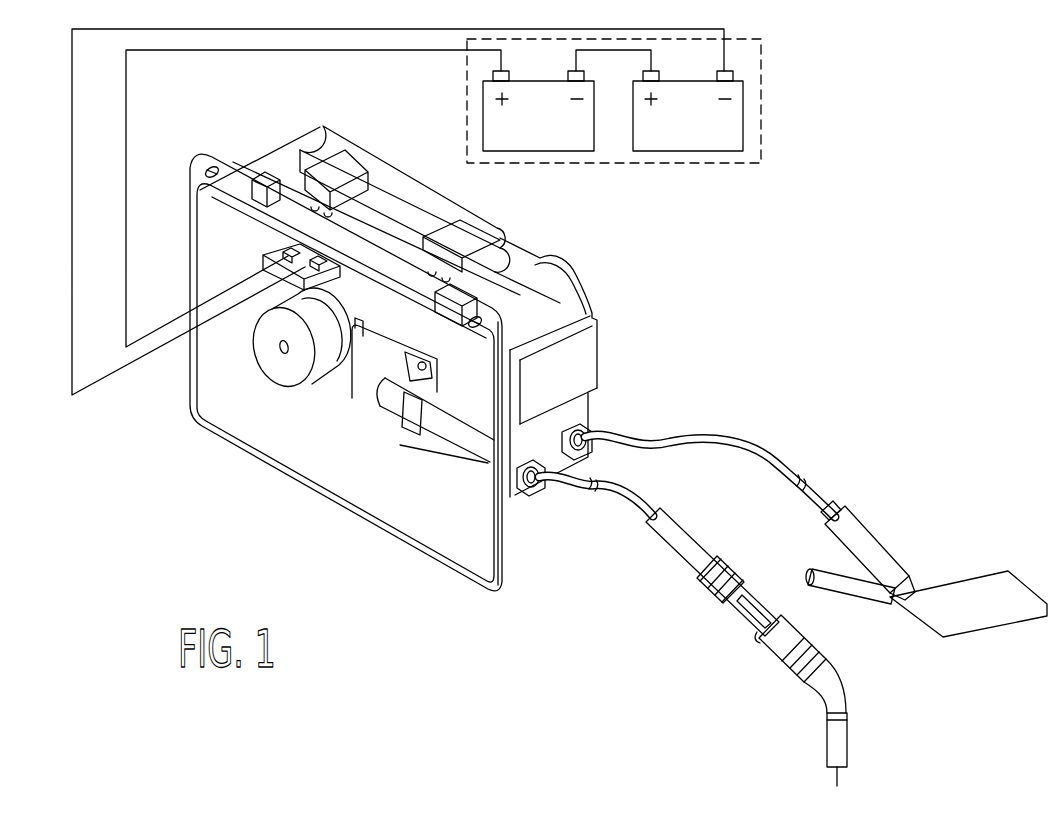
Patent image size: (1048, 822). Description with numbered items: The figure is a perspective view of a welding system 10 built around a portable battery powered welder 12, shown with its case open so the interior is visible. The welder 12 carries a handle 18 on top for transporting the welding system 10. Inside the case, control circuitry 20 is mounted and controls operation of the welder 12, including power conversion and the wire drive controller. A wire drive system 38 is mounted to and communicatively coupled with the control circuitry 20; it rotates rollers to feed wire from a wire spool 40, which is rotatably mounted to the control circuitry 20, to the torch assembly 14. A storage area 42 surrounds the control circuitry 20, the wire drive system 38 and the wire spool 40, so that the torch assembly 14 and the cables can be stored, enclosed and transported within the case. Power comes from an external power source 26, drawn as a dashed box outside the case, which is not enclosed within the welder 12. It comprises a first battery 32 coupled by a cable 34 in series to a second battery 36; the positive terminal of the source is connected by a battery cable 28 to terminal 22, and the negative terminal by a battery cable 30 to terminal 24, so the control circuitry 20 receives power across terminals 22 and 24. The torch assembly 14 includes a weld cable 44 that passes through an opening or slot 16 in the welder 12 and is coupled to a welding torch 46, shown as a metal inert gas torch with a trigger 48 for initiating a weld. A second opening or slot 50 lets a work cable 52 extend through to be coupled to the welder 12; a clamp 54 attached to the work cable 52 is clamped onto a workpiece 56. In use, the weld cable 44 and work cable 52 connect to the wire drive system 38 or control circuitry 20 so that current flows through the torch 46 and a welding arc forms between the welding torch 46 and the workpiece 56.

The welding system 10 is at (836, 273).
The portable battery powered welder 12 is at (572, 300).
The torch assembly 14 is at (723, 647).
The opening or slot 16 is at (536, 486).
The handle 18 is at (357, 163).
The control circuitry 20 is at (335, 388).
The terminal 22 is at (300, 253).
The terminal 24 is at (315, 266).
The external power source 26 is at (762, 100).
The battery cable 28 is at (126, 128).
The battery cable 30 is at (72, 128).
The first battery 32 is at (539, 151).
The cable 34 is at (612, 52).
The second battery 36 is at (686, 151).
The wire drive system 38 is at (367, 395).
The wire spool 40 is at (268, 353).
The storage area 42 is at (450, 514).
The weld cable 44 is at (617, 500).
The welding torch 46 is at (790, 632).
The trigger 48 is at (777, 672).
The opening or slot 50 is at (592, 438).
The work cable 52 is at (724, 443).
The clamp 54 is at (875, 542).
The workpiece 56 is at (970, 617).